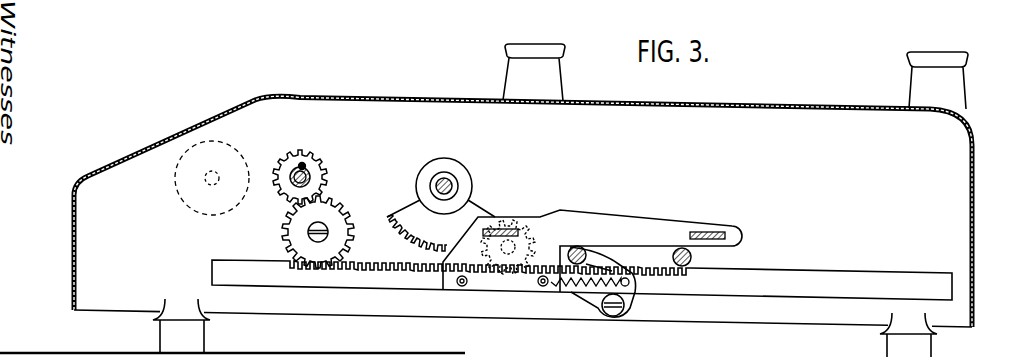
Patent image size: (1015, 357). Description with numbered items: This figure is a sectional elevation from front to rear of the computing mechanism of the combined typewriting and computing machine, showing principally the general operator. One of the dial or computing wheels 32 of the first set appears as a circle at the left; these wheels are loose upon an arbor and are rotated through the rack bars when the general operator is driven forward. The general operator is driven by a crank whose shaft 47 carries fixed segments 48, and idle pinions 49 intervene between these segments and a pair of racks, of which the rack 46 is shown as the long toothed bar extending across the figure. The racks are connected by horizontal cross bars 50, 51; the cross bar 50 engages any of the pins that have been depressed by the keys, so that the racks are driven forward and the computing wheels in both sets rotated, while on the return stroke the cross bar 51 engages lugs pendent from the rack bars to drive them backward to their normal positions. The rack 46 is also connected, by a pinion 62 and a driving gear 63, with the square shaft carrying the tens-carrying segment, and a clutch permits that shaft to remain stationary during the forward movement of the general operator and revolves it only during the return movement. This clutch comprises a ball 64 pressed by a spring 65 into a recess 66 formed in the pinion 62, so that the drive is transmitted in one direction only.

The computing wheel 32 is at (224, 150).
The rack 46 is at (846, 263).
The shaft 47 is at (443, 195).
The segment 48 is at (451, 165).
The idle pinion 49 is at (528, 236).
The cross bar 50 is at (707, 229).
The cross bar 51 is at (510, 228).
The pinion 62 is at (313, 163).
The driving gear 63 is at (344, 211).
The ball 64 is at (303, 163).
The spring 65 is at (309, 177).
The recess 66 is at (306, 170).